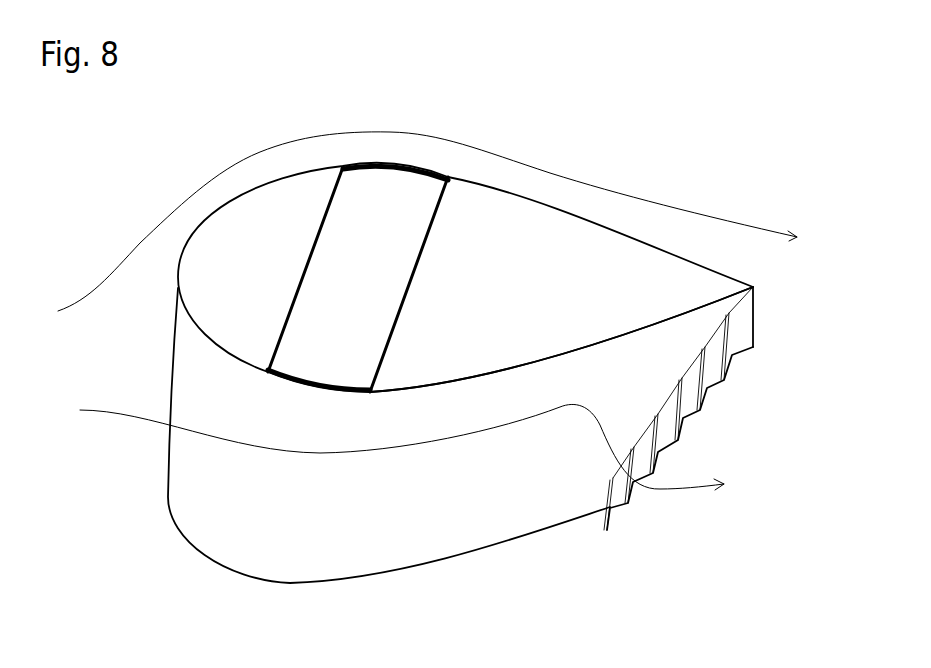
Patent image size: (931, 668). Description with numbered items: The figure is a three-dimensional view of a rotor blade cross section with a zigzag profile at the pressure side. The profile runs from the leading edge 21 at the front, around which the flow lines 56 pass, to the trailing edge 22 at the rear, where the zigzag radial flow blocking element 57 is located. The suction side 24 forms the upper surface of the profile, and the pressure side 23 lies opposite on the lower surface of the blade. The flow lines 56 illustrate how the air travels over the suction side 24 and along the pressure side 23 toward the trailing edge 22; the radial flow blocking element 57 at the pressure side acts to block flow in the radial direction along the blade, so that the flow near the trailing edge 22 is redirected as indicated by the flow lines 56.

The leading edge 21 is at (177, 322).
The trailing edge 22 is at (755, 292).
The lower surface edge 23 is at (516, 385).
The suction side 24 is at (518, 198).
The flow lines 56 is at (427, 311).
The radial flow blocking element 57 is at (710, 392).